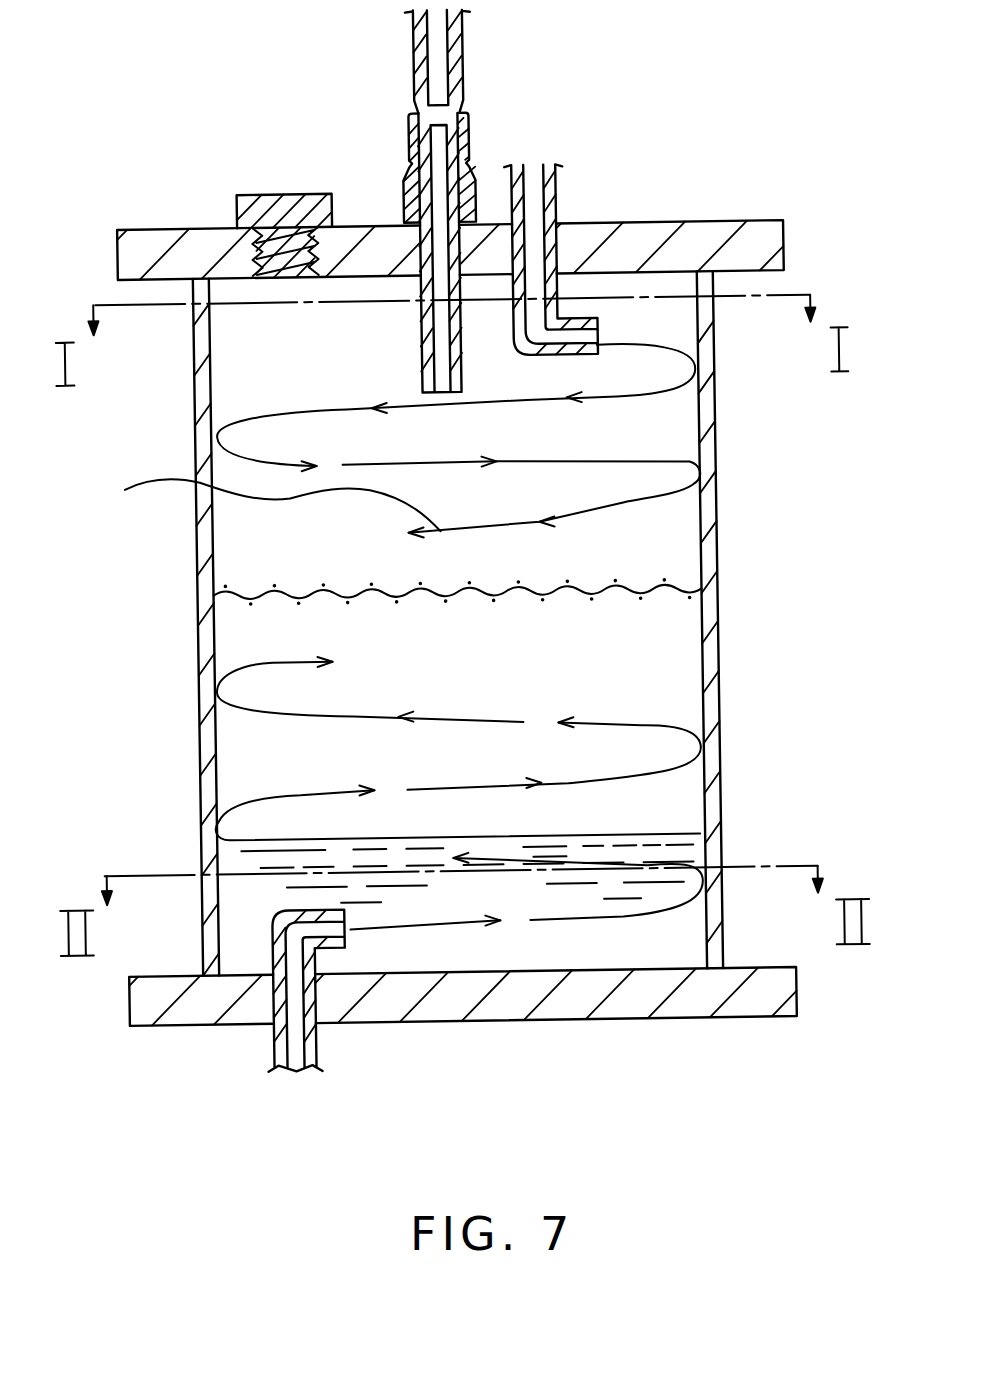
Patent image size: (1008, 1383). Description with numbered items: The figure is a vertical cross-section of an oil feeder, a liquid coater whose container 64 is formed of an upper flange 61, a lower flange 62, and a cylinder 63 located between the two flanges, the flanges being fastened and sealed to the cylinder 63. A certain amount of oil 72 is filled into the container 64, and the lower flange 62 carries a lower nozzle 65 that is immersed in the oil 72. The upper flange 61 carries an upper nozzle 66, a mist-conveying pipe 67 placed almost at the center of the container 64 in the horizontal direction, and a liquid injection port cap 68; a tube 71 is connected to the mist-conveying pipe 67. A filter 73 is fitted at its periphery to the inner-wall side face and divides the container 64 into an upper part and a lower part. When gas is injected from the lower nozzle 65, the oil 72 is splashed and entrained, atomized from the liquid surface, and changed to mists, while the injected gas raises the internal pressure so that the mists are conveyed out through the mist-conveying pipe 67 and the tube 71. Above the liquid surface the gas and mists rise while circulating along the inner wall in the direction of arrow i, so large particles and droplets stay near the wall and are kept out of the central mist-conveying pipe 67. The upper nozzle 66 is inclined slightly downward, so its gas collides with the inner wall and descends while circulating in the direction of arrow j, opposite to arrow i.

The upper flange 61 is at (772, 238).
The lower flange 62 is at (776, 1005).
The cylinder 63 is at (720, 647).
The container 64 is at (650, 433).
The lower nozzle 65 is at (326, 945).
The upper nozzle 66 is at (596, 330).
The mist-conveying pipe 67 is at (421, 322).
The liquid injection port cap 68 is at (291, 192).
The tube 71 is at (422, 53).
The oil 72 is at (668, 945).
The filter 73 is at (634, 596).
The arrow i is at (275, 661).
The arrow j is at (274, 505).